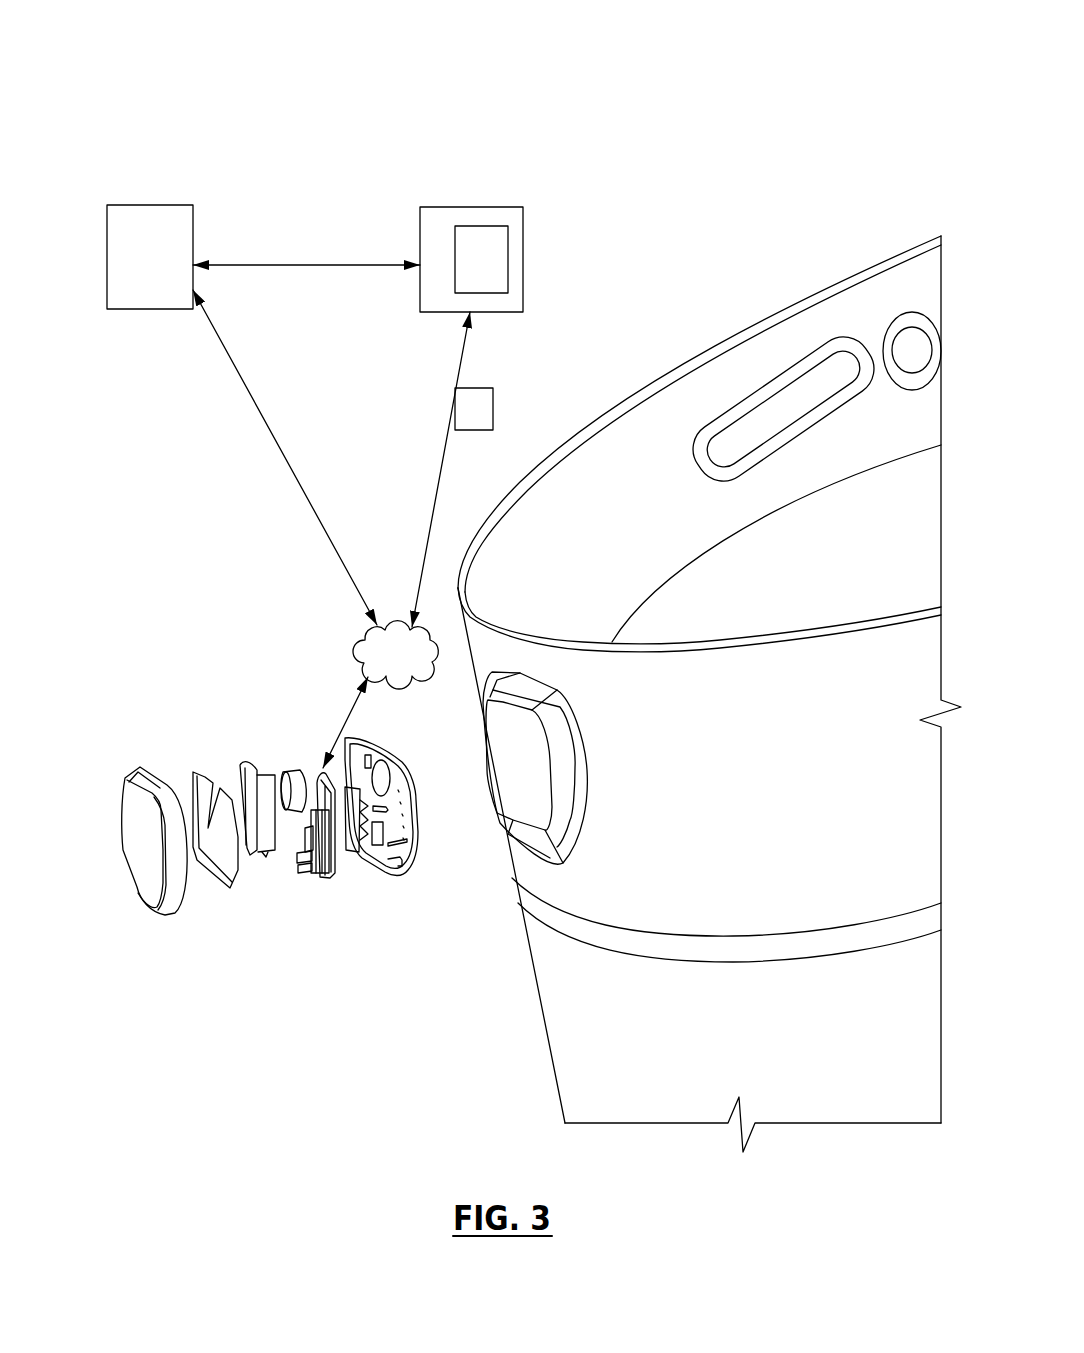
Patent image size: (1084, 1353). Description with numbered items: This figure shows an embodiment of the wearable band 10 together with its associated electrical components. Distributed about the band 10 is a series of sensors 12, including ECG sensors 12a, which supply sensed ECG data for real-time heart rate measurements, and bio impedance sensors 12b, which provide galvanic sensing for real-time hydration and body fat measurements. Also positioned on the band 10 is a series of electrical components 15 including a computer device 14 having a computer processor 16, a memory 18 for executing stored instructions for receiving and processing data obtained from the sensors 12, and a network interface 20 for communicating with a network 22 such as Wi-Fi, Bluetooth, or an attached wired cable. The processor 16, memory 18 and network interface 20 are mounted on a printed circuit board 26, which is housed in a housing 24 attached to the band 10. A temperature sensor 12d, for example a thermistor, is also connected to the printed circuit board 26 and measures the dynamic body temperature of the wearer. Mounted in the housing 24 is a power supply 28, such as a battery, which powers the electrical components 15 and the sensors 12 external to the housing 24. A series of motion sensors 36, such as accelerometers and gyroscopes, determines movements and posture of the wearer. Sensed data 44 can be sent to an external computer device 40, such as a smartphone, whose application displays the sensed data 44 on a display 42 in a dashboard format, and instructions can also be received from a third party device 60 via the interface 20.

The band 10 is at (501, 606).
The sensors/electrodes 12 is at (715, 190).
The ECG sensors 12a is at (771, 378).
The bio impedance sensors 12b is at (904, 328).
The temperature sensor 12d is at (343, 770).
The computer device 14 is at (281, 761).
The electrical components 15 is at (341, 755).
The computer processor 16 is at (302, 867).
The memory 18 is at (307, 833).
The network interface 20 is at (295, 770).
The network 22 is at (384, 671).
The housing 24 is at (133, 835).
The printed circuit board 26 is at (417, 828).
The power supply 28 is at (312, 780).
The motion sensors 36 is at (247, 843).
The external computer device 40 is at (358, 206).
The display 42 is at (478, 240).
The sensed data 44 is at (462, 426).
The third party device 60 is at (150, 257).